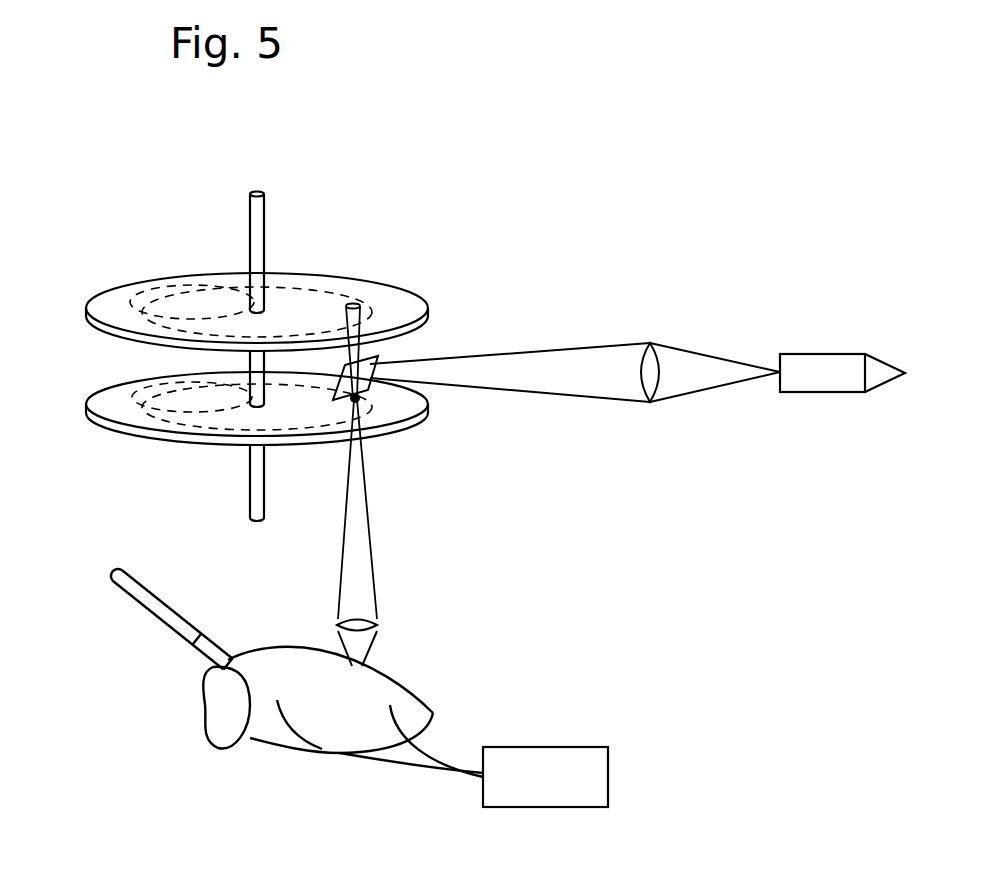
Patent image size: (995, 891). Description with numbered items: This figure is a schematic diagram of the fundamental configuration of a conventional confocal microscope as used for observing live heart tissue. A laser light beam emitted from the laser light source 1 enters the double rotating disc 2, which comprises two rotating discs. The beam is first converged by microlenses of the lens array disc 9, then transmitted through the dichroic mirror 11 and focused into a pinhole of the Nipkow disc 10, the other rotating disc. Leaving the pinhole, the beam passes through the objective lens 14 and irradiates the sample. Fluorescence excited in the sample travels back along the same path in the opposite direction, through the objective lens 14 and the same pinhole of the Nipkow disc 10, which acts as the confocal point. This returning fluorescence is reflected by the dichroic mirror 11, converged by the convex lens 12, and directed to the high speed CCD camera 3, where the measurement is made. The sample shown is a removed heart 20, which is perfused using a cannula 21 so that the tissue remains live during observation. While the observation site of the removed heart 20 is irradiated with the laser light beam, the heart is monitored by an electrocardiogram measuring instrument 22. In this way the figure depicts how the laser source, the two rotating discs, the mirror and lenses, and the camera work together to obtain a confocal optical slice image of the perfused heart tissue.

The laser light source 1 is at (357, 218).
The double rotating disc 2 is at (115, 360).
The high speed CCD camera 3 is at (831, 354).
The lens array disc 9 is at (127, 288).
The Nipkow disc 10 is at (132, 436).
The dichroic mirror 11 is at (338, 382).
The convex lens 12 is at (652, 363).
The objective lens 14 is at (355, 620).
The removed heart 20 is at (277, 742).
The cannula 21 is at (143, 598).
The electrocardiogram measuring instrument 22 is at (556, 747).